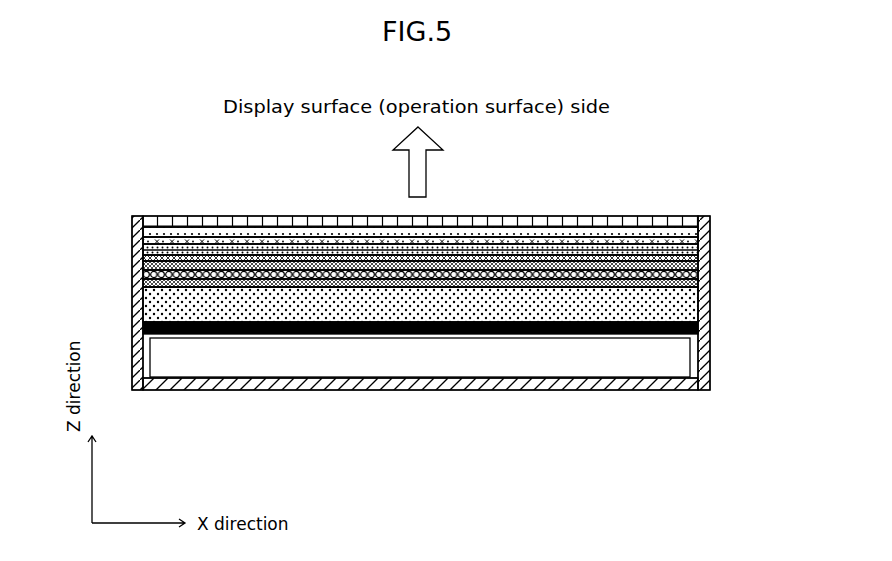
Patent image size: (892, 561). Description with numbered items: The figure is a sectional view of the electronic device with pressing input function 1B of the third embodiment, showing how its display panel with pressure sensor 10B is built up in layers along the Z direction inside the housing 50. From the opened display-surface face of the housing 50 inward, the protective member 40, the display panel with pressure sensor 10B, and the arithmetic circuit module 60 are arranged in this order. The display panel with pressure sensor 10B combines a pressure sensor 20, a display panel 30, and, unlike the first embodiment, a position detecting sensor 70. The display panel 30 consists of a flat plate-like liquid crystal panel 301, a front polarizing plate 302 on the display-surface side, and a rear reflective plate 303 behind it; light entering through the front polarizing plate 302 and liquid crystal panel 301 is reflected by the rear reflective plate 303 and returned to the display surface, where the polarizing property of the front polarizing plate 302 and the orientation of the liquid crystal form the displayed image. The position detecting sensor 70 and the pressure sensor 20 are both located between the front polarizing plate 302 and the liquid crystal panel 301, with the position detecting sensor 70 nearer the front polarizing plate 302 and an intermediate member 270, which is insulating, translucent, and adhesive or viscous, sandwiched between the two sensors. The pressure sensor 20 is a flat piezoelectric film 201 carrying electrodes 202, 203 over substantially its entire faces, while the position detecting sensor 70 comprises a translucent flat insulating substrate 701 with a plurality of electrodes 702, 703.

The electronic device with pressing input function 1B is at (221, 193).
The display panel with pressure sensor 10B is at (743, 200).
The protective member 40 is at (657, 221).
The intermediate member 270 is at (700, 253).
The pressure sensor 20 is at (471, 278).
The piezoelectric film 201 is at (698, 277).
The electrode 202 is at (698, 264).
The electrode 203 is at (698, 287).
The display panel 30 is at (370, 284).
The liquid crystal panel 301 is at (152, 305).
The front polarizing plate 302 is at (183, 233).
The rear reflective plate 303 is at (146, 329).
The position detecting sensor 70 is at (370, 249).
The insulating substrate 701 is at (146, 249).
The electrode 702 is at (146, 240).
The electrode 703 is at (146, 258).
The housing 50 is at (706, 371).
The arithmetic circuit module 60 is at (532, 370).